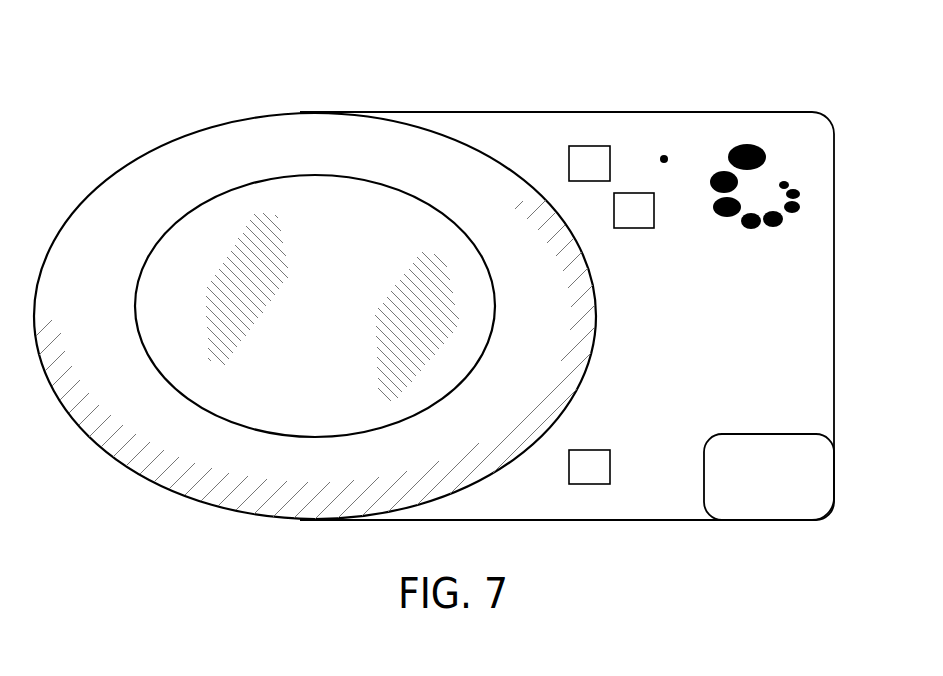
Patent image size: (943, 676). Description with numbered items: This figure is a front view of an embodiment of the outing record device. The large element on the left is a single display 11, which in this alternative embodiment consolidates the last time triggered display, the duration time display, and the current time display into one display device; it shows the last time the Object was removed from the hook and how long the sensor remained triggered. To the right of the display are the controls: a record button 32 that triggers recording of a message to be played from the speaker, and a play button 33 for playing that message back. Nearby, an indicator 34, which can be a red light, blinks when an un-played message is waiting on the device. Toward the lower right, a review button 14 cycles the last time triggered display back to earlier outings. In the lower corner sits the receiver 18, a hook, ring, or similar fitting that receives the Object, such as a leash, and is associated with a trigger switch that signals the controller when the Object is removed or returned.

The display 11 is at (248, 185).
The record button 32 is at (585, 146).
The play button 33 is at (632, 228).
The indicator 34 is at (664, 155).
The review button 14 is at (610, 465).
The receiver 18 is at (768, 434).